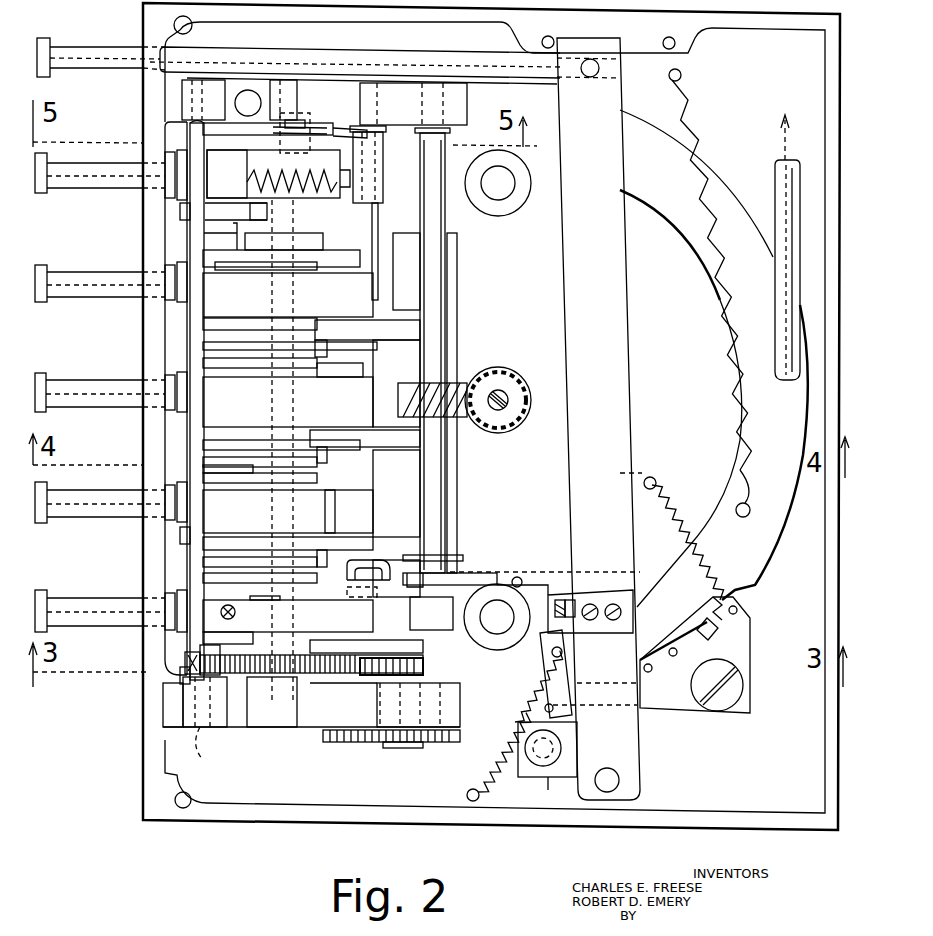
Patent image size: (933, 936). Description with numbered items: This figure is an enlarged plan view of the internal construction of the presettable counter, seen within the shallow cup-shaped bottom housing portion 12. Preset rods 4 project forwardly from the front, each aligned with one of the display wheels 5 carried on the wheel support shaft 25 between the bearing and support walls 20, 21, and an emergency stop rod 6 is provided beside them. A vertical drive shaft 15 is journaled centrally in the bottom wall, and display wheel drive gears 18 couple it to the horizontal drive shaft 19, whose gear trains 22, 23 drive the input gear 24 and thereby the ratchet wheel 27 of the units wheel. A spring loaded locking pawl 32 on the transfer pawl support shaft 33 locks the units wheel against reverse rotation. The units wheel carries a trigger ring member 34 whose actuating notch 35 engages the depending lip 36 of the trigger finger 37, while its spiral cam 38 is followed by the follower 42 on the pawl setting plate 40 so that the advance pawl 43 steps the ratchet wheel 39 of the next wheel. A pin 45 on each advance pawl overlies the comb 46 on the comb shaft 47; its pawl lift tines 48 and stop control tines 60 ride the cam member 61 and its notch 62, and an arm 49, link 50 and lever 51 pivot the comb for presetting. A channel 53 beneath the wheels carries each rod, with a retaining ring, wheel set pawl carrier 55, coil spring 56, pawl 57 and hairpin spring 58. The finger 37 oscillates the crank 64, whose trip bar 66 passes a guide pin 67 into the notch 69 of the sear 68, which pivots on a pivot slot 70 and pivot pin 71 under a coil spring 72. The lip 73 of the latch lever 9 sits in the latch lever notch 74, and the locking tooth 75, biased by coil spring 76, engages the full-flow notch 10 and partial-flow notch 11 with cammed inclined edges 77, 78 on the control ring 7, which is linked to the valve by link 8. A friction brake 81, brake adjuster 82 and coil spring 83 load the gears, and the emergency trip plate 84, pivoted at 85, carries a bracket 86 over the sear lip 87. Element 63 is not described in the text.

The preset rods 4 is at (77, 190).
The display wheels 5 is at (180, 392).
The emergency stop rod 6 is at (100, 48).
The control ring 7 is at (723, 192).
The link 8 is at (797, 173).
The latch lever 9 is at (750, 713).
The full-flow notch 10 is at (757, 578).
The partial-flow notch 11 is at (679, 637).
The bottom housing portion 12 is at (283, 817).
The vertical drive shaft 15 is at (510, 410).
The display wheel drive gears 18 is at (498, 380).
The horizontal drive shaft 19 is at (437, 503).
The bearing and support wall 20 is at (450, 703).
The bearing and support wall 21 is at (463, 106).
The gear train 22 is at (407, 745).
The gear train 23 is at (363, 675).
The input gear 24 is at (262, 680).
The wheel support shaft 25 is at (277, 727).
The ratchet wheel 27 is at (233, 680).
The locking pawl 32 is at (377, 650).
The transfer pawl support shaft 33 is at (378, 217).
The trigger ring member 34 is at (213, 587).
The actuating notch 35 is at (270, 597).
The depending lip 36 is at (336, 511).
The trigger finger 37 is at (415, 612).
The spiral cam 38 is at (257, 573).
The ratchet wheel 39 is at (230, 430).
The pawl setting plate 40 is at (470, 368).
The follower 42 is at (360, 563).
The advance pawl 43 is at (383, 352).
The pin 45 is at (323, 407).
The comb 46 is at (180, 240).
The comb shaft 47 is at (210, 749).
The pawl lift tine 48 is at (282, 445).
The arm 49 is at (247, 125).
The link 50 is at (322, 112).
The lever 51 is at (370, 135).
The channel 53 is at (170, 448).
The wheel set pawl carrier 55 is at (212, 157).
The coil spring 56 is at (310, 192).
The pawl 57 is at (180, 212).
The hairpin spring 58 is at (245, 270).
The stop control tine 60 is at (288, 265).
The cam member 61 is at (203, 467).
The notch 62 is at (295, 372).
The plate 63 is at (372, 612).
The crank 64 is at (437, 583).
The trip bar 66 is at (517, 577).
The guide pin 67 is at (538, 570).
The sear 68 is at (551, 801).
The sear notch 69 is at (547, 567).
The pivot slot 70 is at (563, 733).
The pivot pin 71 is at (562, 748).
The coil spring 72 is at (480, 770).
The lip 73 is at (530, 678).
The latch lever notch 74 is at (557, 703).
The locking tooth 75 is at (740, 608).
The coil spring 76 is at (662, 493).
The cammed inclined edge 77 is at (647, 667).
The cammed inclined edge 78 is at (713, 602).
The friction brake 81 is at (197, 673).
The brake adjuster 82 is at (288, 622).
The coil spring 83 is at (213, 635).
The emergency trip plate 84 is at (630, 371).
The pivot mounting 85 is at (640, 781).
The bracket 86 is at (630, 590).
The lip 87 is at (570, 603).